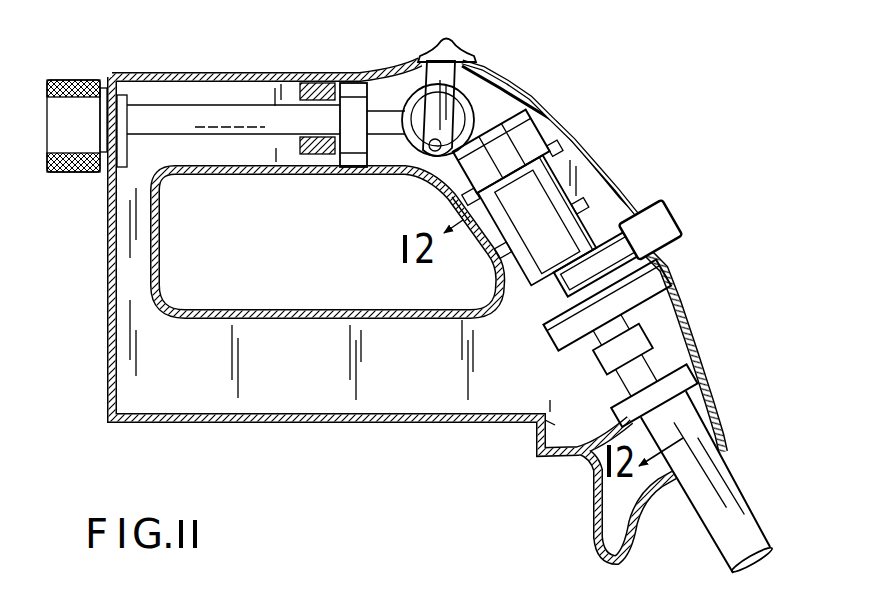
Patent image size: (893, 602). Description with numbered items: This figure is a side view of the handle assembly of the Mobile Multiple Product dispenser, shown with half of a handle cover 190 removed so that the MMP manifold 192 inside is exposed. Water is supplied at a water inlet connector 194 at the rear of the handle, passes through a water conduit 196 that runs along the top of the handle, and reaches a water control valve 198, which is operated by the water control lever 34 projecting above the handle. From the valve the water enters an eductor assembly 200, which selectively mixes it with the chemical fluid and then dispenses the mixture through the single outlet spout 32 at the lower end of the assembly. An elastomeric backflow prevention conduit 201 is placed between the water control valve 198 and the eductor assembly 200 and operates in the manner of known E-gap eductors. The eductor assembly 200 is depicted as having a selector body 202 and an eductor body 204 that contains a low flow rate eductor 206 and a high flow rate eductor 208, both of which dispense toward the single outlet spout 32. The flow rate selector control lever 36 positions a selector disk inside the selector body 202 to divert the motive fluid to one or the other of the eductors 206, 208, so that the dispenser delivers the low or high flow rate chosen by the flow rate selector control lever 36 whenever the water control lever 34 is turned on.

The single outlet spout 32 is at (737, 517).
The water control lever 34 is at (453, 50).
The flow rate selector control lever 36 is at (667, 220).
The handle cover 190 is at (328, 385).
The MMP manifold 192 is at (427, 208).
The water inlet connector 194 is at (53, 152).
The water conduit 196 is at (230, 115).
The water control valve 198 is at (490, 96).
The eductor assembly 200 is at (539, 354).
The elastomeric backflow prevention conduit 201 is at (580, 144).
The selector body 202 is at (614, 198).
The eductor body 204 is at (645, 268).
The low flow rate eductor 206 is at (623, 397).
The high flow rate eductor 208 is at (724, 365).